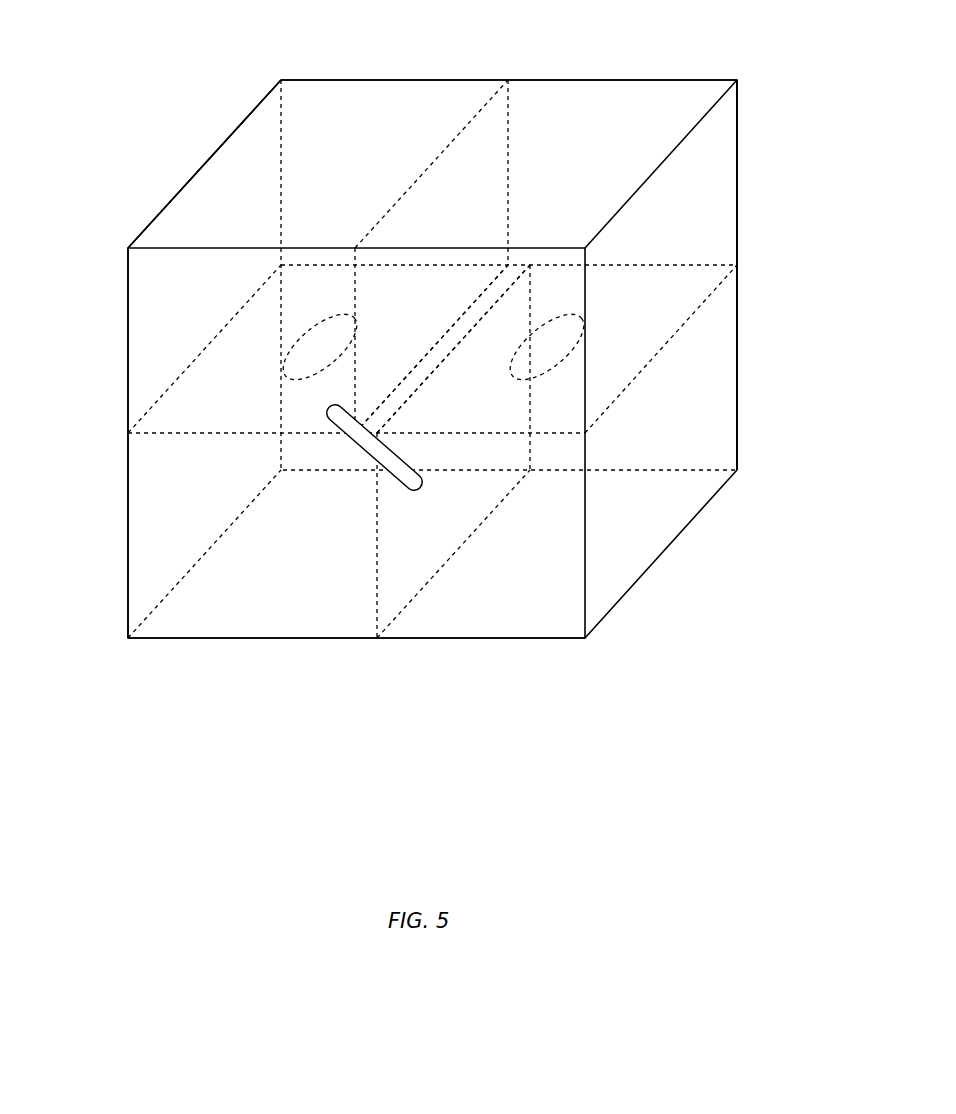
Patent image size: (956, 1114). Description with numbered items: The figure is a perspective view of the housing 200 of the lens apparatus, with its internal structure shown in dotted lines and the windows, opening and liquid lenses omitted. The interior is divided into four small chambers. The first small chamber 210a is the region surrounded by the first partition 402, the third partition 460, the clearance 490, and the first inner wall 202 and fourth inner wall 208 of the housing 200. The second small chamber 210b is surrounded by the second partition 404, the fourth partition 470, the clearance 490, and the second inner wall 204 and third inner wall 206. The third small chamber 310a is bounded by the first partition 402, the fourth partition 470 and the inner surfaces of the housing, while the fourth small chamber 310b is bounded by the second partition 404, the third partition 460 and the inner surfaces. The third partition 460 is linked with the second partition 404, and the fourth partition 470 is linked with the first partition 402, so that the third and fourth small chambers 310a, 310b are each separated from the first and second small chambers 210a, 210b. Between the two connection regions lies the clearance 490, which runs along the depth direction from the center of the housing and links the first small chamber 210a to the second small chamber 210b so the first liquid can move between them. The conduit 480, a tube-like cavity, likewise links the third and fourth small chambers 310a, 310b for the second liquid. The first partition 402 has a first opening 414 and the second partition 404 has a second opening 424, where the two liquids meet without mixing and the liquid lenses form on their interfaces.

The housing 200 is at (452, 820).
The first inner wall 202 is at (206, 182).
The second inner wall 204 is at (730, 138).
The third inner wall 206 is at (358, 95).
The fourth inner wall 208 is at (283, 615).
The first small chamber 210a is at (148, 529).
The second small chamber 210b is at (718, 198).
The third small chamber 310a is at (148, 339).
The fourth small chamber 310b is at (718, 394).
The first partition 402 is at (173, 408).
The second partition 404 is at (683, 292).
The first opening 414 is at (328, 326).
The second opening 424 is at (518, 362).
The third partition 460 is at (425, 560).
The fourth partition 470 is at (493, 137).
The conduit 480 is at (357, 455).
The clearance 490 is at (524, 252).